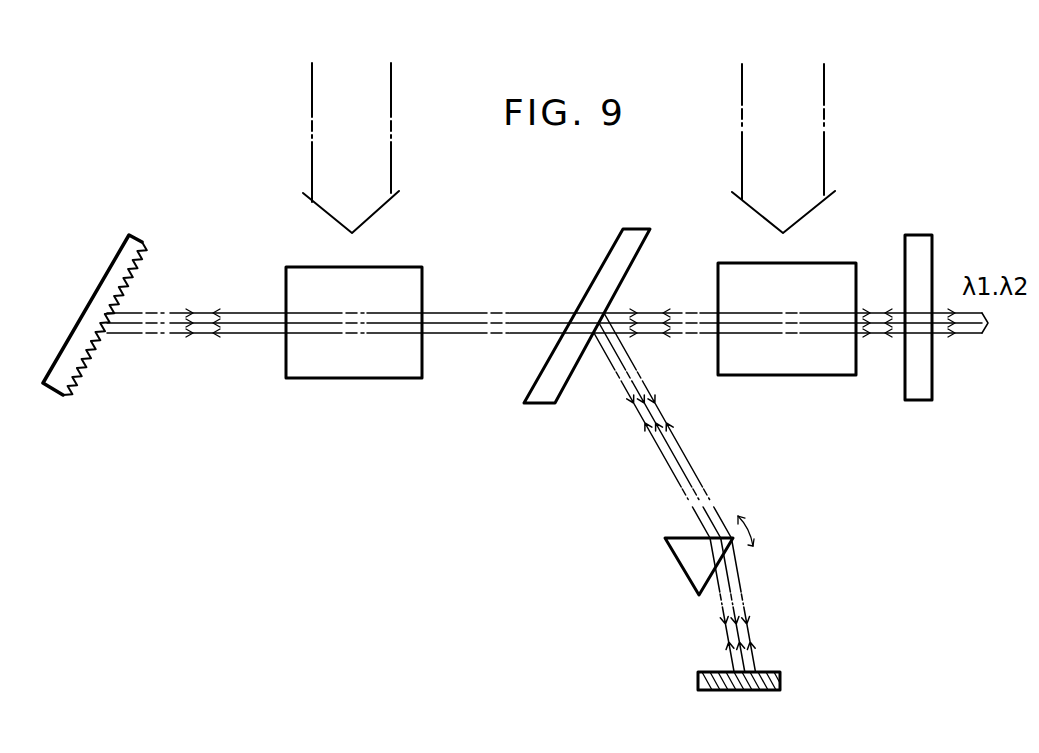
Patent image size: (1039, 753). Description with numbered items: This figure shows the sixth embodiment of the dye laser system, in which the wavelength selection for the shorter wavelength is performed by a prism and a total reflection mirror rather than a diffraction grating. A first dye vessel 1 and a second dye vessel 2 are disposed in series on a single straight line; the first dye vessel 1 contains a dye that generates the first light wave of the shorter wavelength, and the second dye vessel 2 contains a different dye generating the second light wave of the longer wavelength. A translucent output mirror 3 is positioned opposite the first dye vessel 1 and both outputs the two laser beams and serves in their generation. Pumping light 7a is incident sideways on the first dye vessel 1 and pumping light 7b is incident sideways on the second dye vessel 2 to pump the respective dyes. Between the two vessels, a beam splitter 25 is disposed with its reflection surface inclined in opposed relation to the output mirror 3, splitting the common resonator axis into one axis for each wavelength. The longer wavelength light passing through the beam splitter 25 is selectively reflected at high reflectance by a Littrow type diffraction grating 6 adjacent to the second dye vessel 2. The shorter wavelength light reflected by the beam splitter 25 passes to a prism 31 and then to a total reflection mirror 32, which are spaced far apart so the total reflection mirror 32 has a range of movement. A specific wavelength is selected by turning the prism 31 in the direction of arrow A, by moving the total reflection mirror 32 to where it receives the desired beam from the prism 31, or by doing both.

The first dye vessel 1 is at (790, 367).
The second dye vessel 2 is at (354, 370).
The output mirror 3 is at (920, 390).
The second wavelength selecting means 6 is at (80, 362).
The pumping light 7a is at (783, 88).
The pumping light 7b is at (352, 95).
The beam splitter 25 is at (549, 394).
The prism 31 is at (688, 565).
The total reflection mirror 32 is at (698, 680).
The arrow A is at (758, 532).